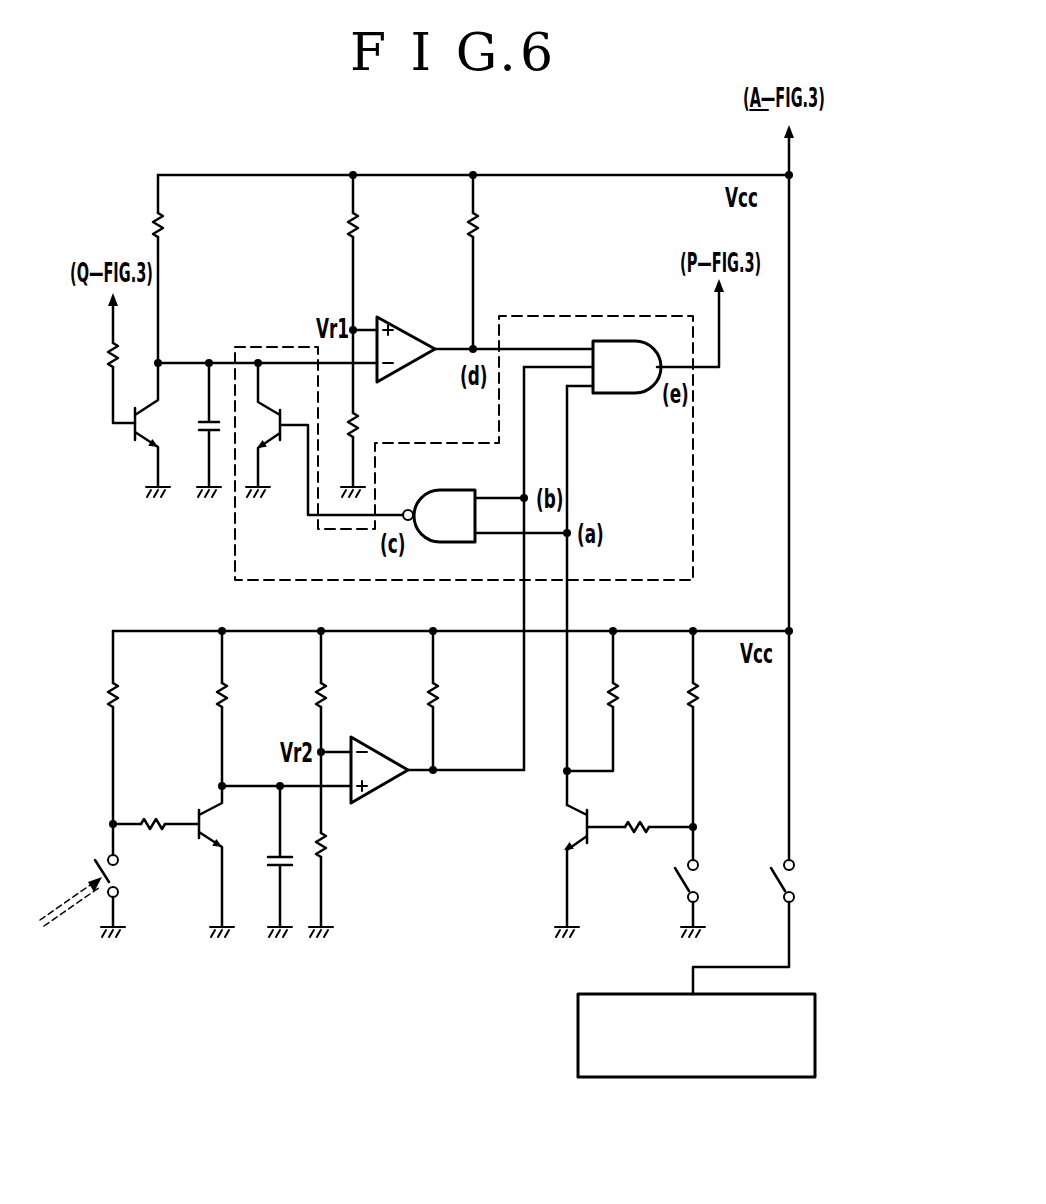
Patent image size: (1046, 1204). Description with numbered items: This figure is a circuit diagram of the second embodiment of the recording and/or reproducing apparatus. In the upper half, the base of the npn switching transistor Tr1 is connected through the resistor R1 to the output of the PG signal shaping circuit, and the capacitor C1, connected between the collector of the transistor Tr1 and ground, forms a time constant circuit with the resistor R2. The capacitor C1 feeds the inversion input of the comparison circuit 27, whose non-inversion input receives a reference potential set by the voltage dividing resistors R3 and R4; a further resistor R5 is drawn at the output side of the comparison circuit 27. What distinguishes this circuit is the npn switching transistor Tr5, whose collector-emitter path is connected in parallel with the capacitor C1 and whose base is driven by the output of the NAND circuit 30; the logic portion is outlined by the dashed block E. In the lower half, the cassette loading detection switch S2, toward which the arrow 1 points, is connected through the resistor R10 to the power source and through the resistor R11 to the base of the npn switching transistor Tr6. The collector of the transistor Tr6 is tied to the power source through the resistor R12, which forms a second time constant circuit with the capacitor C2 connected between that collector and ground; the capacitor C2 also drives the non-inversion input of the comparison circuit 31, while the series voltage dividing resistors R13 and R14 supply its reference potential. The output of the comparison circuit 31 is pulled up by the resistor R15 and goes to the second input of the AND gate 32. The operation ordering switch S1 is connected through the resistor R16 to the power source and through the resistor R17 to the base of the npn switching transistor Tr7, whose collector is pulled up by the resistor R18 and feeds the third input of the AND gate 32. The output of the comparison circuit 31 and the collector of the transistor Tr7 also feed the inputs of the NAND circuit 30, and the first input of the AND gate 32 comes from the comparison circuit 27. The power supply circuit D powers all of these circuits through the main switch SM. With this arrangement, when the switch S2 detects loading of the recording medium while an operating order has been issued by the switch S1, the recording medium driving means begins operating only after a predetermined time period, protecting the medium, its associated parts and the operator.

The resistor R1 is at (106, 358).
The resistor R2 is at (164, 224).
The voltage dividing resistor R3 is at (360, 222).
The voltage dividing resistor R4 is at (360, 418).
The resistor R5 is at (480, 222).
The resistor R10 is at (120, 694).
The resistor R11 is at (152, 812).
The resistor R12 is at (229, 694).
The voltage dividing resistor R13 is at (328, 694).
The voltage dividing resistor R14 is at (328, 848).
The pull-up resistor R15 is at (440, 694).
The resistor R16 is at (700, 698).
The resistor R17 is at (641, 815).
The pull-up resistor R18 is at (620, 700).
The capacitor C1 is at (198, 425).
The capacitor C2 is at (268, 860).
The npn switching transistor Tr1 is at (128, 446).
The npn switching transistor Tr5 is at (278, 438).
The npn switching transistor Tr6 is at (197, 840).
The npn switching transistor Tr7 is at (578, 832).
The comparison circuit 27 is at (405, 322).
The NAND circuit 30 is at (448, 490).
The comparison circuit 31 is at (392, 784).
The AND gate 32 is at (625, 393).
The operation ordering switch S1 is at (679, 890).
The recording medium loading detection switch S2 is at (118, 878).
The main switch SM is at (778, 882).
The power supply circuit D is at (578, 1035).
The control circuit E is at (693, 512).
The switch operation 1 is at (57, 914).